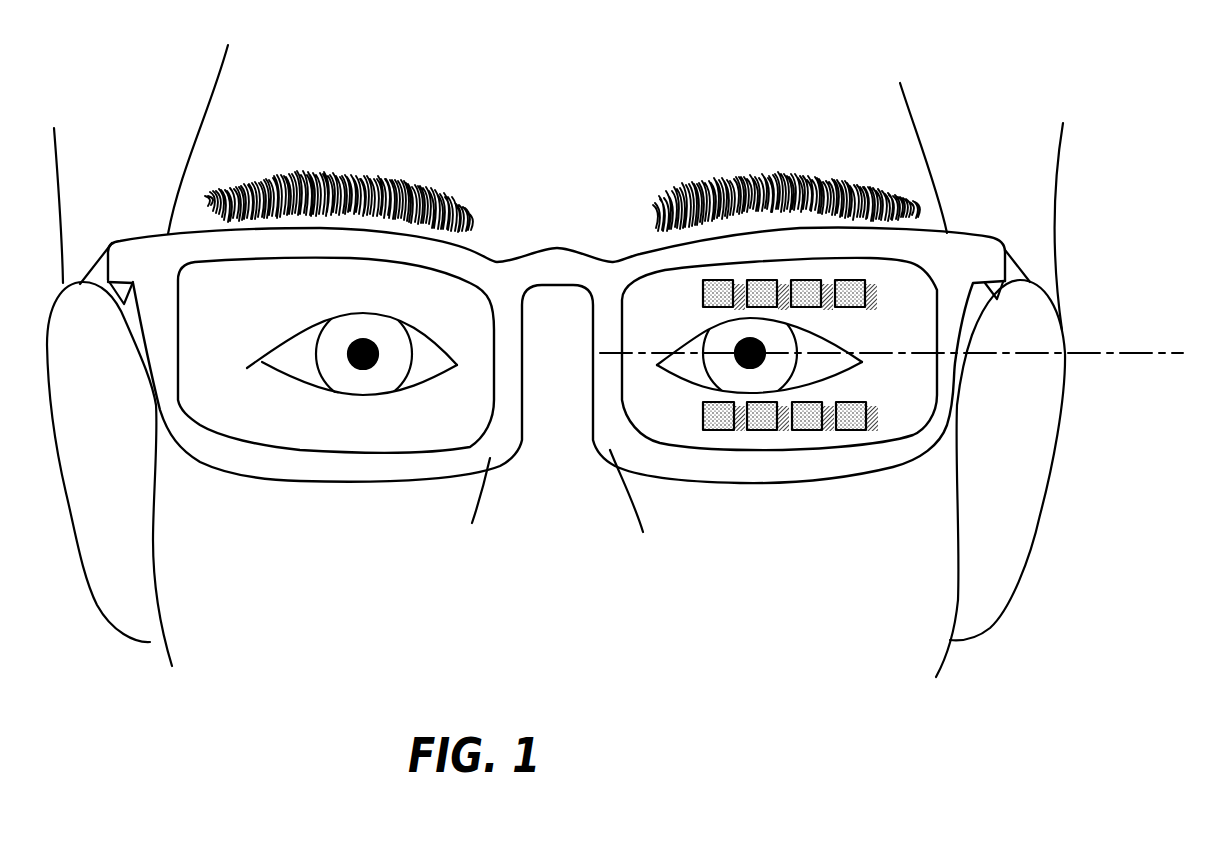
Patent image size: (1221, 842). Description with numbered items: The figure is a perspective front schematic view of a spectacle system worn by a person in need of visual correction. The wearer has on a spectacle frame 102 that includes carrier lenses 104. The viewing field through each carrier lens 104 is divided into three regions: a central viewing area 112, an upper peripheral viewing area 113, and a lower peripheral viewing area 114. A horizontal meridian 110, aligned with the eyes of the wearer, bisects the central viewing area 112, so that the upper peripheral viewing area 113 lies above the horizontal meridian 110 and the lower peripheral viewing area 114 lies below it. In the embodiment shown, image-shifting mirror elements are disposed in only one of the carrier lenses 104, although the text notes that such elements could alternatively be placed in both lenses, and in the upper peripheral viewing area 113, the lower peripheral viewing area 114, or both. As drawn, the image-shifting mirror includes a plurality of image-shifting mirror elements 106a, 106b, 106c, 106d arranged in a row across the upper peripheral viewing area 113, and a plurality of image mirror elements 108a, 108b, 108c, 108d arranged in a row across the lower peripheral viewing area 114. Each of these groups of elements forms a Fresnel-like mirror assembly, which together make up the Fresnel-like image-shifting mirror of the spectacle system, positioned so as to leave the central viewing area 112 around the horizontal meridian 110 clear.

The spectacle frame 102 is at (618, 447).
The carrier lenses 104 is at (643, 395).
The image-shifting mirror element 106a is at (703, 289).
The image-shifting mirror element 106b is at (753, 282).
The image-shifting mirror element 106c is at (796, 280).
The image-shifting mirror element 106d is at (856, 281).
The image mirror element 108a is at (713, 430).
The image mirror element 108b is at (757, 430).
The image mirror element 108c is at (803, 430).
The image mirror element 108d is at (853, 430).
The horizontal meridian 110 is at (1125, 353).
The central viewing area 112 is at (818, 363).
The upper peripheral viewing area 113 is at (932, 308).
The lower peripheral viewing area 114 is at (921, 416).